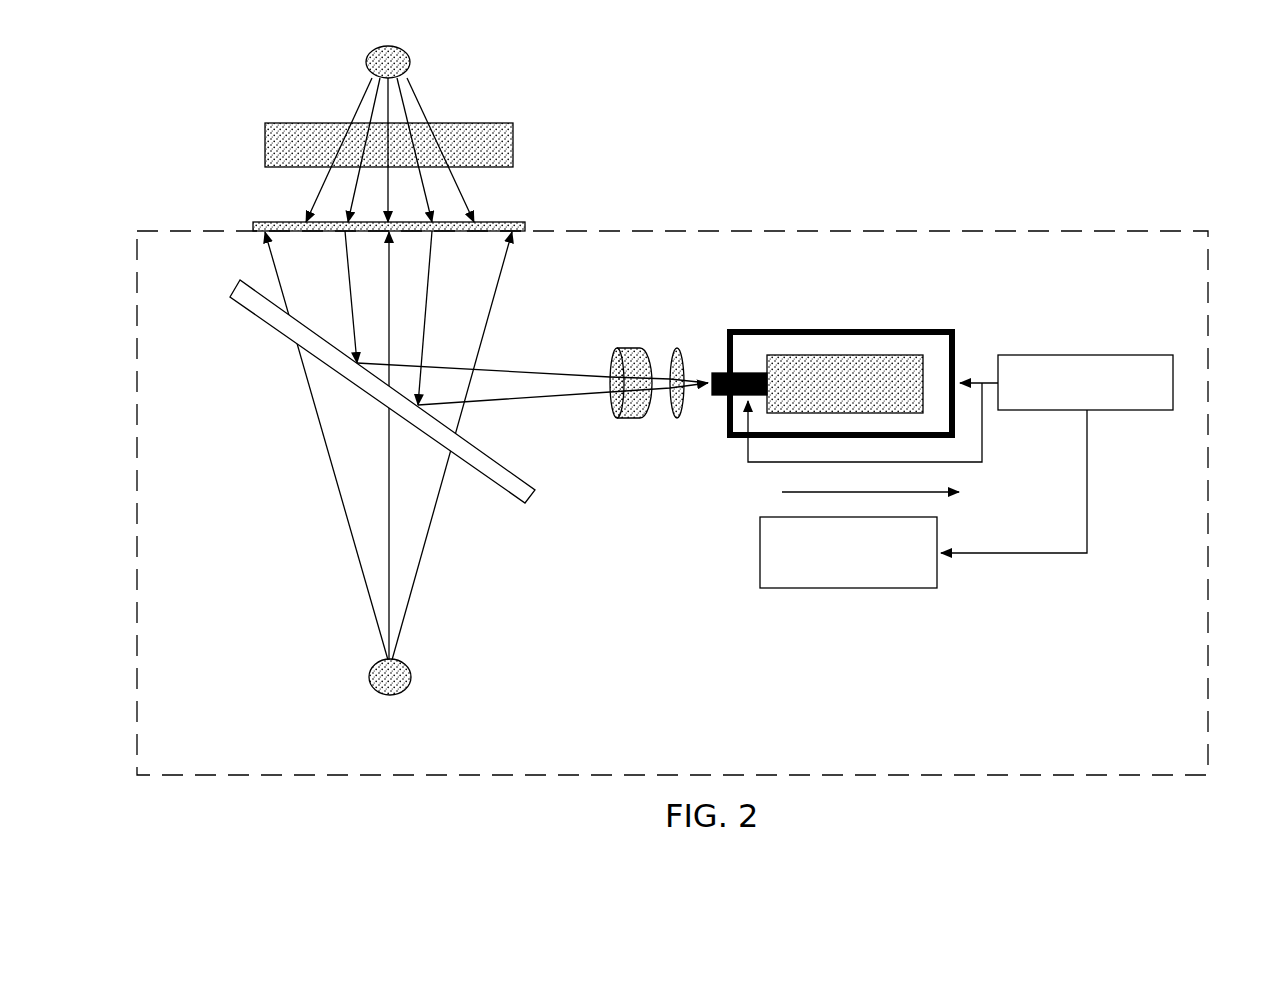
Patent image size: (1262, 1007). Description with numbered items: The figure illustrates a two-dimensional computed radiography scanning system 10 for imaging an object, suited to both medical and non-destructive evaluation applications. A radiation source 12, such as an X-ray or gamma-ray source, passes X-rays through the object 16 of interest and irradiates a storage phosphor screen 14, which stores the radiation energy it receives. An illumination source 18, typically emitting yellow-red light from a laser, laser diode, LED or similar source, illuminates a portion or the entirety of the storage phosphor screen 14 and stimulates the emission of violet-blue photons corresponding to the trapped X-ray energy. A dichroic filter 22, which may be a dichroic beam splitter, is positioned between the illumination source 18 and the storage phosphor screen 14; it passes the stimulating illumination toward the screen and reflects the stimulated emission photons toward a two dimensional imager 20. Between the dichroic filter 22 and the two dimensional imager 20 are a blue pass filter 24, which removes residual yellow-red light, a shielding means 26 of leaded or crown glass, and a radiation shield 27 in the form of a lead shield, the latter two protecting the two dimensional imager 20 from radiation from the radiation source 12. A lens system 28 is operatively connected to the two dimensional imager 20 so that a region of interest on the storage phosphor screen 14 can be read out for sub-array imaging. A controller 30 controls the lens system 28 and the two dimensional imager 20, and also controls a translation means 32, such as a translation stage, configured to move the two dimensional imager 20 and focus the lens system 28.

The two-dimensional computed radiography scanning system 10 is at (1164, 111).
The radiation source 12 is at (411, 63).
The storage phosphor screen 14 is at (517, 222).
The object 16 is at (515, 143).
The illumination source 18 is at (412, 675).
The two dimensional imager 20 is at (912, 355).
The dichroic filter 22 is at (518, 477).
The blue pass filter 24 is at (677, 346).
The shielding means 26 is at (632, 345).
The radiation shield 27 is at (828, 329).
The lens system 28 is at (747, 372).
The controller 30 is at (1085, 353).
The translation means 32 is at (850, 590).